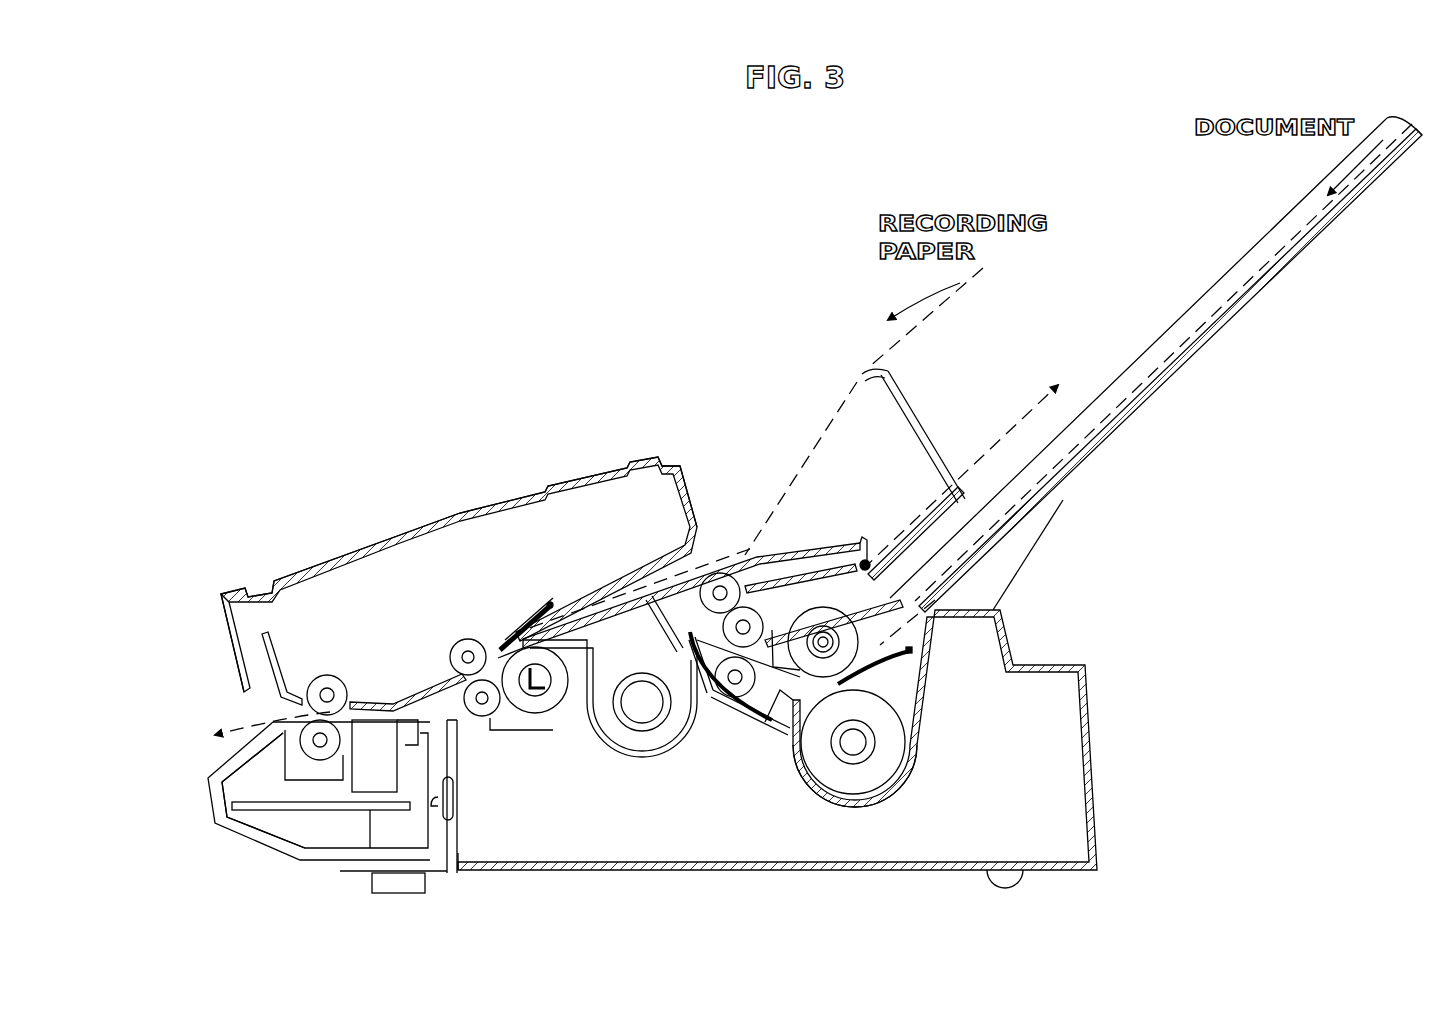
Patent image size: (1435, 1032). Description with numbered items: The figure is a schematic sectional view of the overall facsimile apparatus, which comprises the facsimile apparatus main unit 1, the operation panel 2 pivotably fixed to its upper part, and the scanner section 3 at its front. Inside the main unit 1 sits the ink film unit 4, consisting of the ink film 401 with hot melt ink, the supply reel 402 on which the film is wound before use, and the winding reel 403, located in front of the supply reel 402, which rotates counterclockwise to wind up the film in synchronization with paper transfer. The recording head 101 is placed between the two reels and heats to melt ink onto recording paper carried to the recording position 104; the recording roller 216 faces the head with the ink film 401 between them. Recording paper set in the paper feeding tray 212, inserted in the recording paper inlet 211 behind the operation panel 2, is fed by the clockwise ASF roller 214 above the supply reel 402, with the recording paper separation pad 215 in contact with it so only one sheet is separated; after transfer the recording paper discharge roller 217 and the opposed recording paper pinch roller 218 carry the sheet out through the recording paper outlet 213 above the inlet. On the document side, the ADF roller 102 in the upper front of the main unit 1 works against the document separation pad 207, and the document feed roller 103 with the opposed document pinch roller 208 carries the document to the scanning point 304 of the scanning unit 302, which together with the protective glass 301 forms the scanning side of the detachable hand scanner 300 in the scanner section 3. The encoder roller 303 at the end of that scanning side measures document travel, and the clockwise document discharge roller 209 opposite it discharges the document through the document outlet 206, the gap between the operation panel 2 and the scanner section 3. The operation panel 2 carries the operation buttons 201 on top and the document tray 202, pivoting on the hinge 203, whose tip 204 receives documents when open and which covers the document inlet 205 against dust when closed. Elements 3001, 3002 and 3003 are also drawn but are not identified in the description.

The facsimile apparatus main unit 1 is at (706, 878).
The operation panel 2 is at (470, 432).
The scanner section 3 is at (232, 870).
The ink film unit 4 is at (813, 783).
The recording head 101 is at (780, 737).
The ADF roller 102 is at (537, 703).
The document feed roller 103 is at (478, 718).
The recording position 104 is at (738, 735).
The operation buttons 201 is at (400, 533).
The document tray 202 is at (912, 402).
The hinge 203 is at (877, 557).
The tip 204 is at (862, 372).
The document inlet 205 is at (697, 560).
The document outlet 206 is at (263, 700).
The document separation pad 207 is at (505, 640).
The document pinch roller 208 is at (460, 637).
The document discharge roller 209 is at (335, 677).
The recording paper inlet 211 is at (895, 600).
The paper feeding tray 212 is at (1188, 363).
The recording paper outlet 213 is at (977, 487).
The ASF roller 214 is at (847, 643).
The recording paper separation pad 215 is at (912, 667).
The recording roller 216 is at (735, 692).
The recording paper discharge roller 217 is at (765, 610).
The recording paper pinch roller 218 is at (763, 557).
The hand scanner 300 is at (340, 852).
The protective glass 301 is at (380, 717).
The scanning unit 302 is at (377, 773).
The encoder roller 303 is at (303, 747).
The scanning point 304 is at (367, 720).
The ink film 401 is at (857, 777).
The supply reel 402 is at (880, 753).
The winding reel 403 is at (633, 710).
The cassette guide 3001 is at (268, 813).
The cassette lock 3002 is at (432, 807).
The lock hook 3003 is at (458, 808).